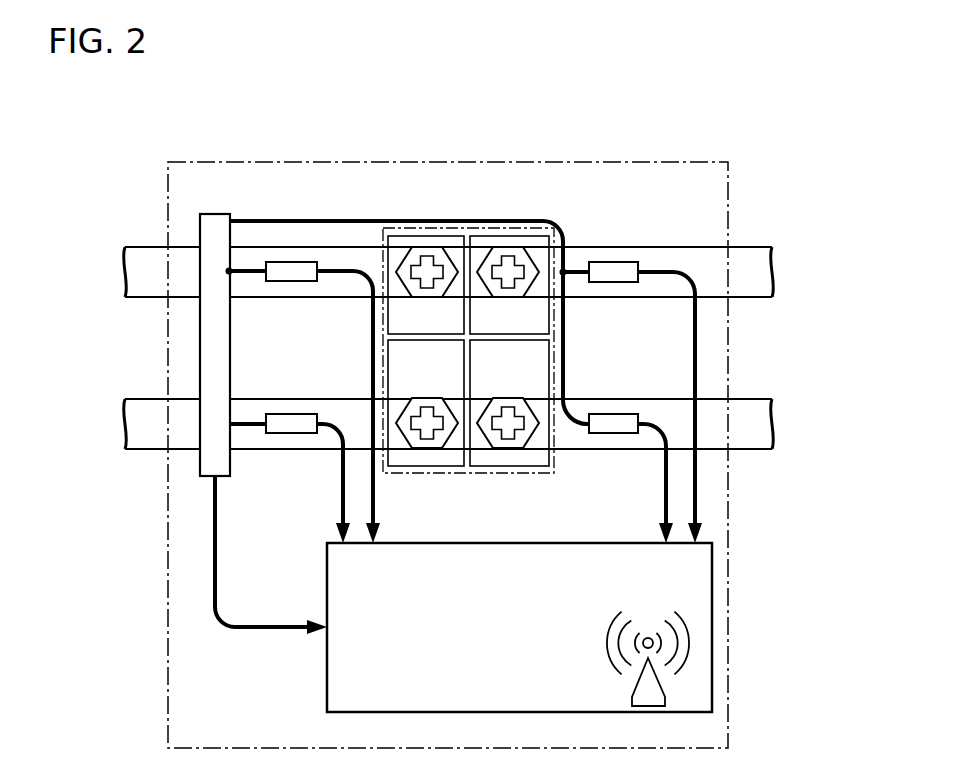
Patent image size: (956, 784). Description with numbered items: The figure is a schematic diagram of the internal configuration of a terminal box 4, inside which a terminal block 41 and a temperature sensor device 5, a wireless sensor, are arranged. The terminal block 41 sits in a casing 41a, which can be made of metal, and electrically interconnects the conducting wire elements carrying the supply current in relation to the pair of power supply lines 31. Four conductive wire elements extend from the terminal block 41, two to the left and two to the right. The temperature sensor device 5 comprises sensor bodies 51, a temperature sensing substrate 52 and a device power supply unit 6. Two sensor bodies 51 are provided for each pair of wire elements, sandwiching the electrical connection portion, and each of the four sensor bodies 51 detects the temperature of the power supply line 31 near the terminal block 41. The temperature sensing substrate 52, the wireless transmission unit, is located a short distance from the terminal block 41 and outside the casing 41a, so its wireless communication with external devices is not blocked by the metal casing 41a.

The terminal box 4 is at (667, 162).
The temperature sensor device 5 is at (205, 653).
The device power supply unit 6 is at (217, 232).
The power supply line 31 is at (155, 232).
The terminal block 41 is at (453, 247).
The casing 41a is at (516, 227).
The sensor body 51 is at (282, 262).
The temperature sensing substrate 52 is at (712, 578).